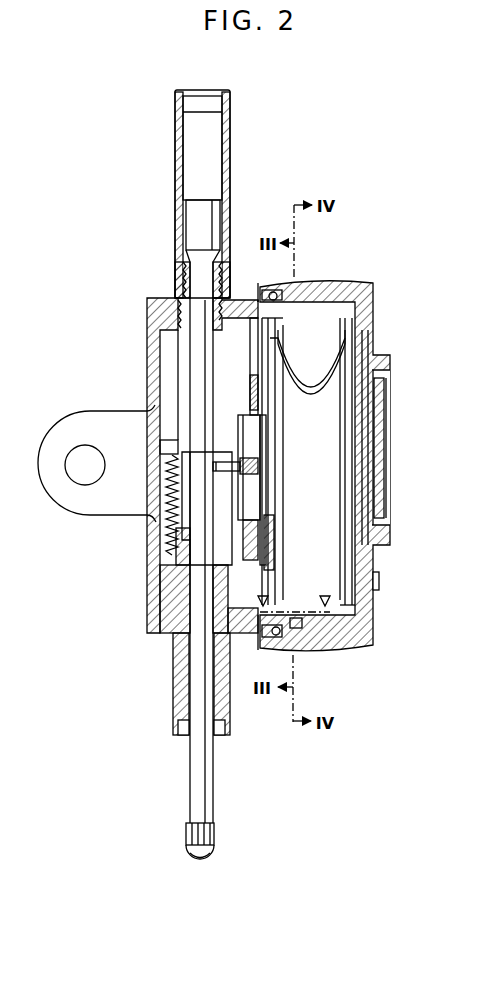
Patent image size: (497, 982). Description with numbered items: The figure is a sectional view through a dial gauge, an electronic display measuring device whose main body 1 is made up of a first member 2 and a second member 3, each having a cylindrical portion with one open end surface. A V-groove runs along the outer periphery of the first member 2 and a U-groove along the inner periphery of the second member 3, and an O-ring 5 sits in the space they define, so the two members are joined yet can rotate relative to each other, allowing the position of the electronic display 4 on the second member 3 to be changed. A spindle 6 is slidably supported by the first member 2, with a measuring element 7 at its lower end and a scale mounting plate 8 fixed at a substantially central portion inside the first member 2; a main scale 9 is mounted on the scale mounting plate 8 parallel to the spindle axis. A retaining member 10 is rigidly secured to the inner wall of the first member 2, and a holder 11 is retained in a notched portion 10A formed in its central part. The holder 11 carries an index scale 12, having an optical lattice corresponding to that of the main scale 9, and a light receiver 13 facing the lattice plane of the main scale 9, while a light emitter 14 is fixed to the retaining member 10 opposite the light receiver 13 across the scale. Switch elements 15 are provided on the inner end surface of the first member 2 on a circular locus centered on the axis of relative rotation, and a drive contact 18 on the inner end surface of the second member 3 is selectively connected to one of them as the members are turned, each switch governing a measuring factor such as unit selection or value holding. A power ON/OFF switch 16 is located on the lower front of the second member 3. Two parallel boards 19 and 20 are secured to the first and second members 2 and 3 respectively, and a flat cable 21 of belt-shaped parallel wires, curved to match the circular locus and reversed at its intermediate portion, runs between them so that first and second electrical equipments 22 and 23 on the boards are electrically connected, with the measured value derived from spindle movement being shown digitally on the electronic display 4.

The main body 1 is at (327, 274).
The first member 2 is at (147, 300).
The second member 3 is at (375, 296).
The electronic display 4 is at (380, 492).
The O-ring 5 is at (273, 292).
The spindle 6 is at (190, 760).
The measuring element 7 is at (196, 845).
The scale mounting plate 8 is at (178, 532).
The main scale 9 is at (240, 524).
The retaining member 10 is at (256, 380).
The notched portion 10A is at (252, 412).
The holder 11 is at (262, 505).
The index scale 12 is at (252, 490).
The light receiver 13 is at (245, 467).
The light emitter 14 is at (222, 468).
The switch elements 15 is at (282, 625).
The power ON/OFF switch 16 is at (380, 584).
The drive contact 18 is at (303, 621).
The board 19 is at (276, 428).
The board 20 is at (345, 478).
The flat cable 21 is at (327, 368).
The first electrical equipment 22 is at (270, 550).
The second electrical equipment 23 is at (353, 560).